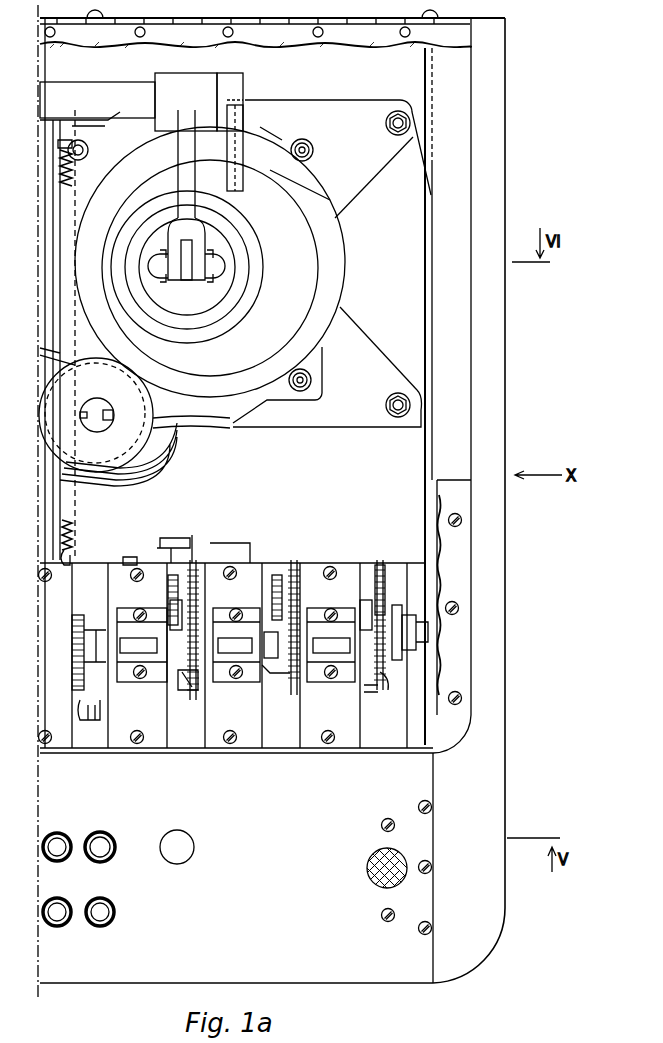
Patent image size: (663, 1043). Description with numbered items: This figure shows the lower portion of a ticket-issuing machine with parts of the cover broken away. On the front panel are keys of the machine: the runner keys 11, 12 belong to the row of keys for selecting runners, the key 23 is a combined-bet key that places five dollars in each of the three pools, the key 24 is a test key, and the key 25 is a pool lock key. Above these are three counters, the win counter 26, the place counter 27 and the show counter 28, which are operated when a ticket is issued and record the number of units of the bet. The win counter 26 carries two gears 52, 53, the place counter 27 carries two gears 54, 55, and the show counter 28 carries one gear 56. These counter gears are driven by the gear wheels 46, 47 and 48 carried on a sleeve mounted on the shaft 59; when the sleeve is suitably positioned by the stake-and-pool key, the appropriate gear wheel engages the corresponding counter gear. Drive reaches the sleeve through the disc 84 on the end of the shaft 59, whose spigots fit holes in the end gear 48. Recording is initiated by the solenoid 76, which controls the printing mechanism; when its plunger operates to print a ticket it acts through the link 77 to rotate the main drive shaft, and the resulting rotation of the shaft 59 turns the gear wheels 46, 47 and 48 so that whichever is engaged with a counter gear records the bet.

The solenoid 76 is at (290, 244).
The link 77 is at (50, 493).
The shaft 59 is at (98, 637).
The win counter 26 is at (123, 637).
The place counter 27 is at (222, 632).
The show counter 28 is at (317, 630).
The gear 52 is at (167, 627).
The gear 53 is at (197, 620).
The gear 54 is at (278, 630).
The gear 55 is at (300, 622).
The gear 56 is at (368, 622).
The gear wheel 46 is at (187, 677).
The gear wheel 47 is at (290, 687).
The end gear 48 is at (382, 683).
The disc 84 is at (397, 643).
The key 23 is at (66, 833).
The test key 24 is at (104, 832).
The pool lock key 25 is at (187, 820).
The key 11 is at (62, 898).
The key 12 is at (106, 898).